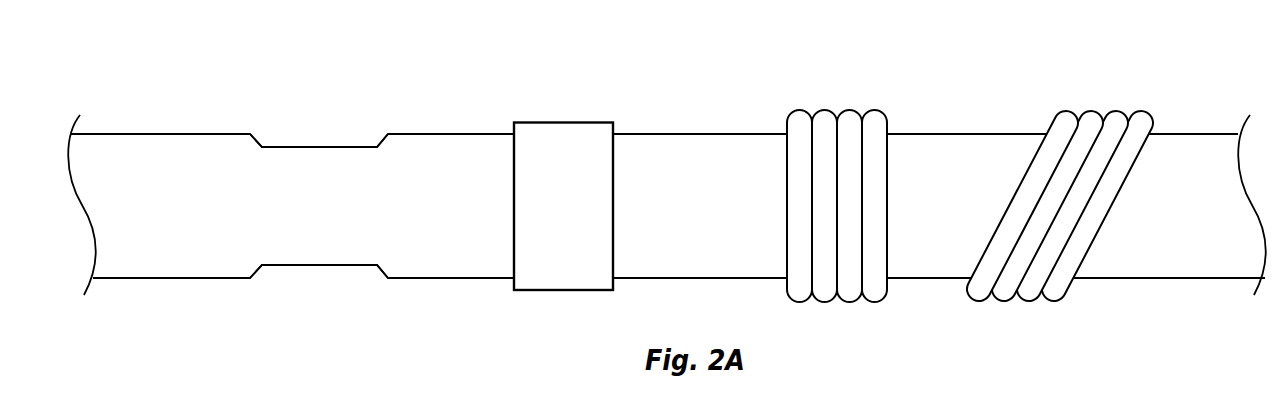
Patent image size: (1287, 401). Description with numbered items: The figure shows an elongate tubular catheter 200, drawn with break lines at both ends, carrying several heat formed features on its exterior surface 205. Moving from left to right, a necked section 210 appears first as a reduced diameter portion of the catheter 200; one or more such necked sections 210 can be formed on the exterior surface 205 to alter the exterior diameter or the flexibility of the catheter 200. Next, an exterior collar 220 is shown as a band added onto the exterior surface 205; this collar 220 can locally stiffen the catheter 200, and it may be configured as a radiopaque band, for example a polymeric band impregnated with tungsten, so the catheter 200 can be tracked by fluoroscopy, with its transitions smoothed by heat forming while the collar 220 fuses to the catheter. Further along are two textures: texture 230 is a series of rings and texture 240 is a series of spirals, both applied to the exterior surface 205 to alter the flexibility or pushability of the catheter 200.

The catheter 200 is at (453, 60).
The exterior surface 205 is at (477, 133).
The necked section 210 is at (316, 147).
The exterior collar 220 is at (553, 143).
The texture of rings 230 is at (845, 143).
The texture of spirals 240 is at (1109, 142).